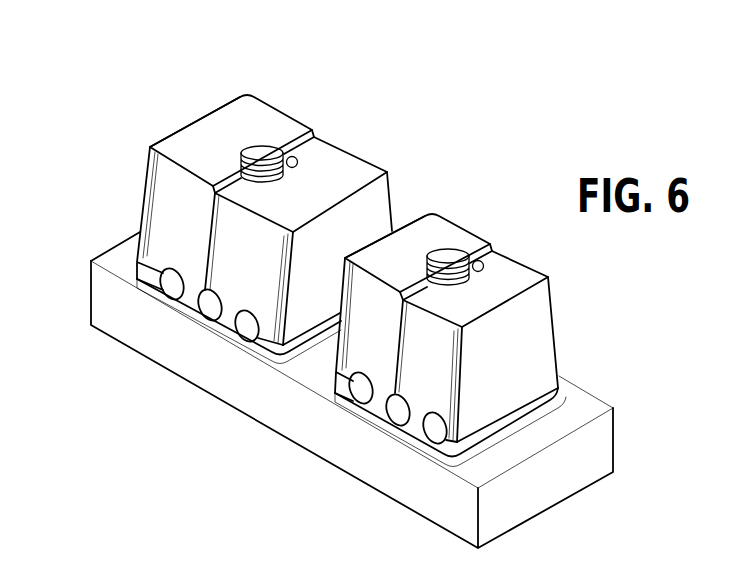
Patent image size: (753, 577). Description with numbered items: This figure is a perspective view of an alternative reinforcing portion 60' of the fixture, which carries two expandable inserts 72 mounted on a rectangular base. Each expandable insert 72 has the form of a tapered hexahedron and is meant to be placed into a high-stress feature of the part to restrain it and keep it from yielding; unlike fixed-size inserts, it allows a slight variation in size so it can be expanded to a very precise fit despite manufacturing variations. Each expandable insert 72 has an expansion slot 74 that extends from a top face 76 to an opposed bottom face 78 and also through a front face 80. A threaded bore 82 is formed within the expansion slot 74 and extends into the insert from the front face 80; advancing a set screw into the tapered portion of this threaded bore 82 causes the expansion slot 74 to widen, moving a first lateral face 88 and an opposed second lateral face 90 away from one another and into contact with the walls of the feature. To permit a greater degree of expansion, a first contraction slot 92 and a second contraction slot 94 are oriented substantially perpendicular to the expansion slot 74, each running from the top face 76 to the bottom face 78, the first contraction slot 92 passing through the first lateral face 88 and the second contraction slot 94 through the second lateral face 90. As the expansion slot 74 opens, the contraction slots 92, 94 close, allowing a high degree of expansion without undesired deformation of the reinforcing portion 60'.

The reinforcing portion 60' is at (322, 325).
The expandable insert 72 is at (246, 94).
The expansion slot 74 is at (316, 128).
The top face 76 is at (386, 168).
The bottom face 78 is at (224, 327).
The front face 80 is at (257, 110).
The threaded bore 82 is at (300, 164).
The first lateral face 88 is at (195, 122).
The second lateral face 90 is at (378, 197).
The first contraction slot 92 is at (140, 264).
The second contraction slot 94 is at (281, 348).